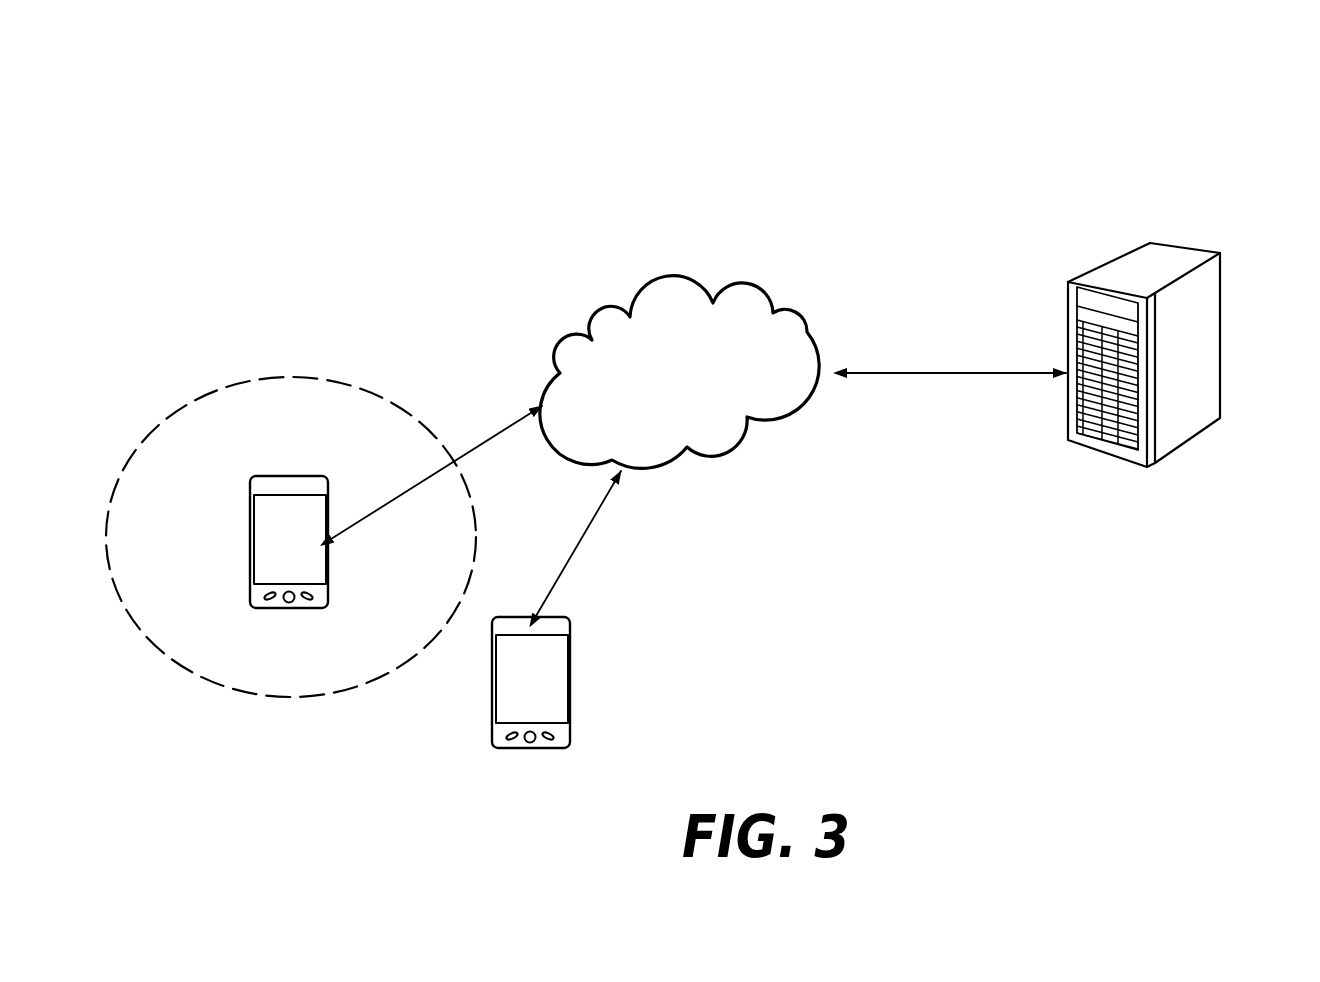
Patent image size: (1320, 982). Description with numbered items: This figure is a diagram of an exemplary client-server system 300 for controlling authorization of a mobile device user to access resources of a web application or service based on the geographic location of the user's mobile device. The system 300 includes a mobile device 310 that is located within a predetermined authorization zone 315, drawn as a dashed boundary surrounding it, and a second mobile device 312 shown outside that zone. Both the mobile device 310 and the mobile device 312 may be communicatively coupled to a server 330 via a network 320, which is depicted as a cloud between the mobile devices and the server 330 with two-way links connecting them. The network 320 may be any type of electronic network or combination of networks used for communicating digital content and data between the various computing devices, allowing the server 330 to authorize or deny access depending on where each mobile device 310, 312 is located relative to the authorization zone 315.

The client-server system 300 is at (1178, 156).
The mobile device 310 is at (328, 558).
The mobile device 312 is at (570, 698).
The predetermined authorization zone 315 is at (290, 376).
The network 320 is at (818, 328).
The server 330 is at (1220, 345).